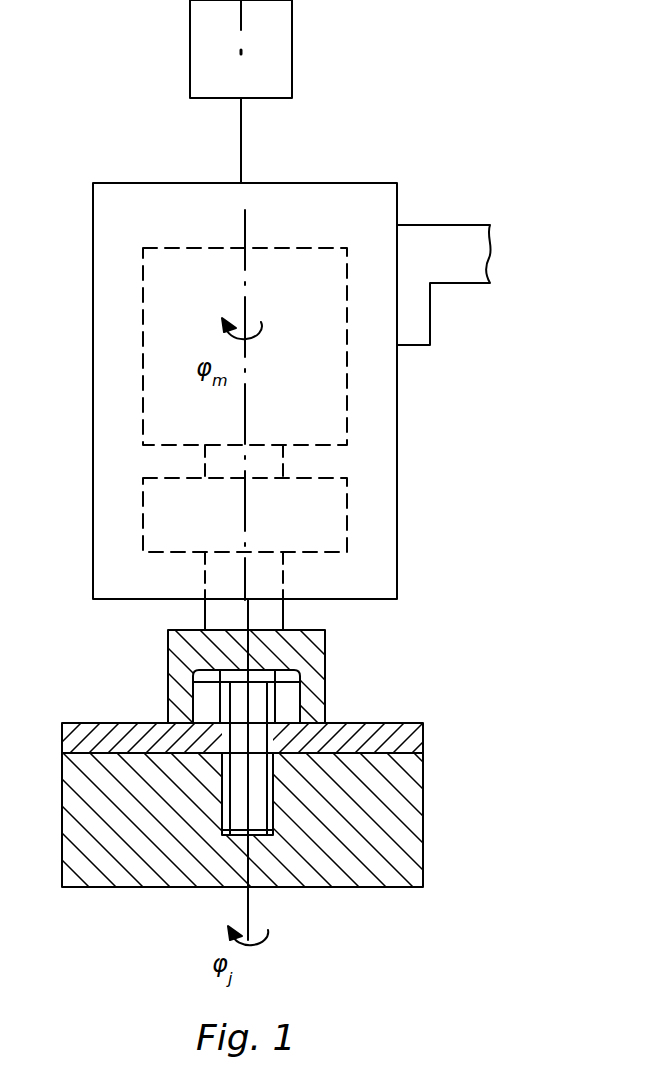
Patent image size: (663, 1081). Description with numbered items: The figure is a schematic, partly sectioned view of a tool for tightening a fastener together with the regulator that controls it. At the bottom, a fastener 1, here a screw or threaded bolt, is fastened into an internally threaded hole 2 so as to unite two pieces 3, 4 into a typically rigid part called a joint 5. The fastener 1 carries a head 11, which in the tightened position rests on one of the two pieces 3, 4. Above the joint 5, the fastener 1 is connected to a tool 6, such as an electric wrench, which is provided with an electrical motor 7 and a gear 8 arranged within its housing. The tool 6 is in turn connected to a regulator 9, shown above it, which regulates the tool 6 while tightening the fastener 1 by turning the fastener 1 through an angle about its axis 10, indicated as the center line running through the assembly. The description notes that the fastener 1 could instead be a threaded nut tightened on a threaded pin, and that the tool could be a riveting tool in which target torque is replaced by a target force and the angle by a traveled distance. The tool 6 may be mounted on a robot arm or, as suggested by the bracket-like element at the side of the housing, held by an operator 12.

The fastener 1 is at (285, 700).
The internally threaded hole 2 is at (228, 822).
The piece 3 is at (413, 723).
The piece 4 is at (423, 797).
The joint 5 is at (436, 654).
The tool 6 is at (400, 430).
The electrical motor 7 is at (143, 374).
The gear 8 is at (143, 490).
The regulator 9 is at (293, 40).
The axis 10 is at (276, 814).
The head 11 is at (204, 700).
The operator 12 is at (448, 226).